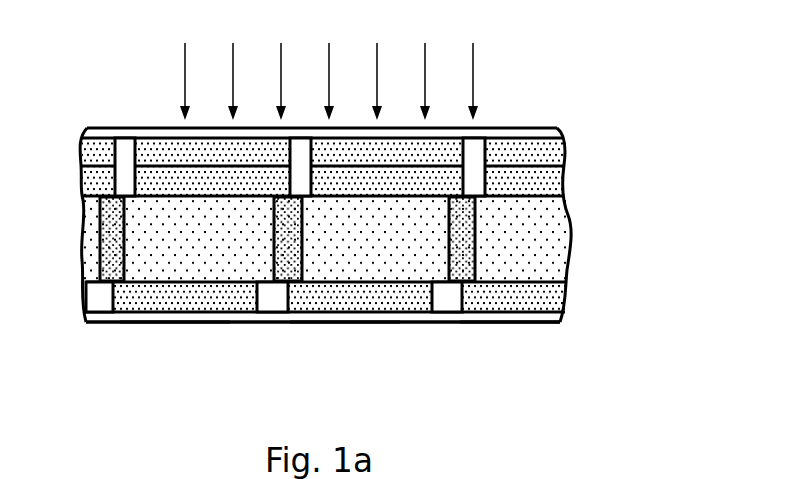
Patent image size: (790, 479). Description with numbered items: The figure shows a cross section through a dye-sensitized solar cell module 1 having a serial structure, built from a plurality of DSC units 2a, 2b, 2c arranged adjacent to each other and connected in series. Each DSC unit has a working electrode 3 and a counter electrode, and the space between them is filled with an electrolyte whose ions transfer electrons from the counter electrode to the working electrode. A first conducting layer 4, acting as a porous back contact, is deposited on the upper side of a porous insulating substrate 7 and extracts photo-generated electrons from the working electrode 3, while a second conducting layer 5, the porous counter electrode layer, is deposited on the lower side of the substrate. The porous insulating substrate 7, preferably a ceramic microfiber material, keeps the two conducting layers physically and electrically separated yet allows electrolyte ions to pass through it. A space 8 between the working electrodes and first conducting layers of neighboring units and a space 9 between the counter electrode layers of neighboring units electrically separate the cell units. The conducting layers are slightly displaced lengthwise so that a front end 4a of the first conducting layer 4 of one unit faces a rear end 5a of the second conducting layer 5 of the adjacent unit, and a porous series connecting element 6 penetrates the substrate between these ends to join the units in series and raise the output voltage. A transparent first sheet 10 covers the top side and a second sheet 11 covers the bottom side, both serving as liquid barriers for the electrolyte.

The dye-sensitized solar cell module 1 is at (537, 85).
The DSC unit 2a is at (180, 322).
The DSC unit 2b is at (346, 322).
The DSC unit 2c is at (511, 322).
The working electrode 3 is at (548, 150).
The first conducting layer 4 is at (548, 182).
The front end of the first conducting layer 4a is at (289, 187).
The second conducting layer 5 is at (143, 302).
The rear end of the second conducting layer 5a is at (288, 300).
The series connecting element 6 is at (458, 235).
The porous insulating substrate 7 is at (549, 262).
The space 8 is at (127, 146).
The space 9 is at (445, 303).
The first sheet 10 is at (152, 130).
The second sheet 11 is at (402, 316).